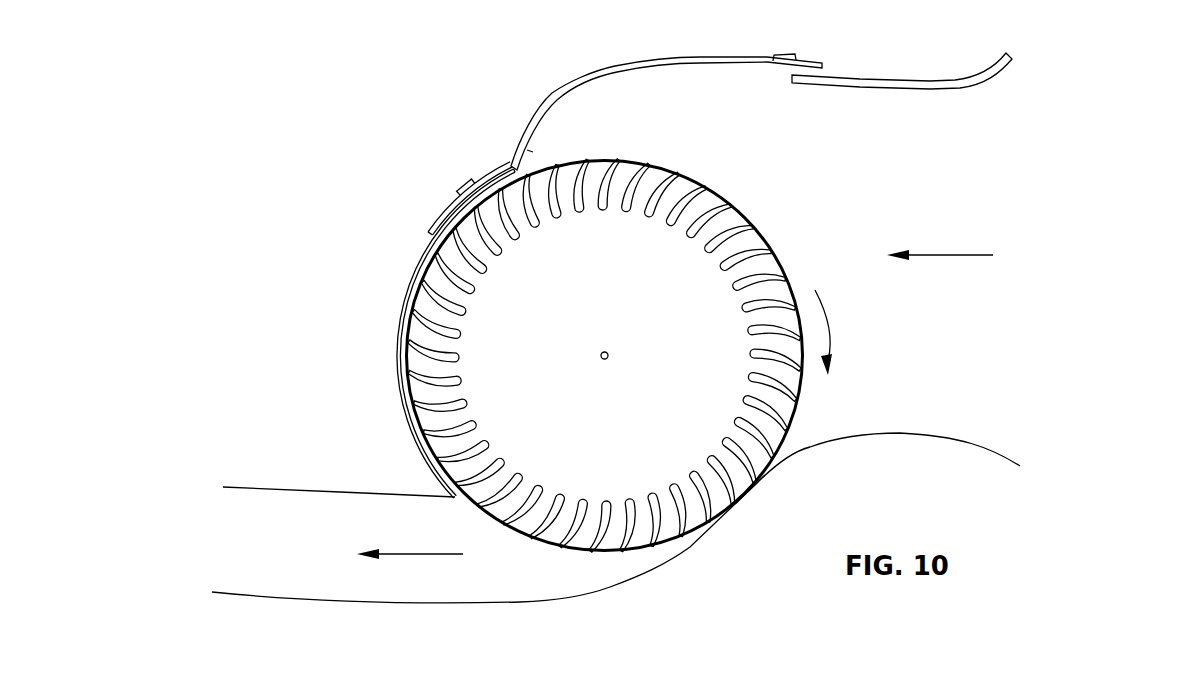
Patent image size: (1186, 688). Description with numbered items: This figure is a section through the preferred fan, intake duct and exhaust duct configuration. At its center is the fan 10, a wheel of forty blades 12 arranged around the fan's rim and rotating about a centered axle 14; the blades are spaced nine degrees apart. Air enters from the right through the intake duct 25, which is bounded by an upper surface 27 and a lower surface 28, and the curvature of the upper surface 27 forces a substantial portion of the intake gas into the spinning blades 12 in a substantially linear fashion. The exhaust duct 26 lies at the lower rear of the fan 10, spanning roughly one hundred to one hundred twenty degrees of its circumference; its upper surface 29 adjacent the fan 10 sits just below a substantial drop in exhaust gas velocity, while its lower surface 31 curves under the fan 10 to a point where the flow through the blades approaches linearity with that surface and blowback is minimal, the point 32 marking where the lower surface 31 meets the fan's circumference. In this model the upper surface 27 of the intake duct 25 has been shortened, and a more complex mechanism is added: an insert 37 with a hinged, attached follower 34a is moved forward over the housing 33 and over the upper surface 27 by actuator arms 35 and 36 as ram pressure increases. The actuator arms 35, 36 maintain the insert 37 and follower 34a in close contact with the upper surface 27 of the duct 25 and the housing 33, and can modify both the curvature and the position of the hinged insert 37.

The fan 10 is at (756, 216).
The blades 12 is at (682, 224).
The axle 14 is at (608, 354).
The intake duct 25 is at (944, 338).
The exhaust duct 26 is at (302, 558).
The upper surface 27 is at (920, 82).
The lower surface 28 is at (925, 435).
The upper surface 29 is at (267, 487).
The lower surface 31 is at (270, 598).
The cutoff 32 is at (750, 491).
The housing 33 is at (408, 284).
The follower 34a is at (432, 232).
The actuator arm 35 is at (462, 186).
The actuator arm 36 is at (697, 60).
The insert 37 is at (558, 98).